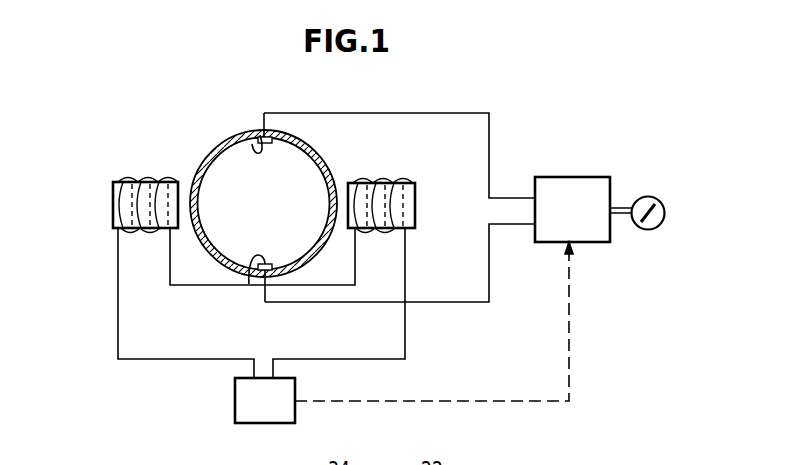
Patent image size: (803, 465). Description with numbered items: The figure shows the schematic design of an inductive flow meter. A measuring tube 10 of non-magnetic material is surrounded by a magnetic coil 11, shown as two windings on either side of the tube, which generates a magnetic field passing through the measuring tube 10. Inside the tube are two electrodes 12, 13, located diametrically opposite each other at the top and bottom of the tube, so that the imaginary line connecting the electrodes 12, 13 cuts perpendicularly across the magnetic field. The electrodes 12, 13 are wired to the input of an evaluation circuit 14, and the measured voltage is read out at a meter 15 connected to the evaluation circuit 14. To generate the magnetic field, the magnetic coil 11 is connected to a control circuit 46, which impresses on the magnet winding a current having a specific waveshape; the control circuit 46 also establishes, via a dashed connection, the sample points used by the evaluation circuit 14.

The measuring tube 10 is at (210, 156).
The magnetic coil 11 is at (108, 207).
The electrode 12 is at (252, 144).
The electrode 13 is at (249, 283).
The evaluation circuit 14 is at (563, 187).
The meter 15 is at (645, 197).
The control circuit 46 is at (242, 398).